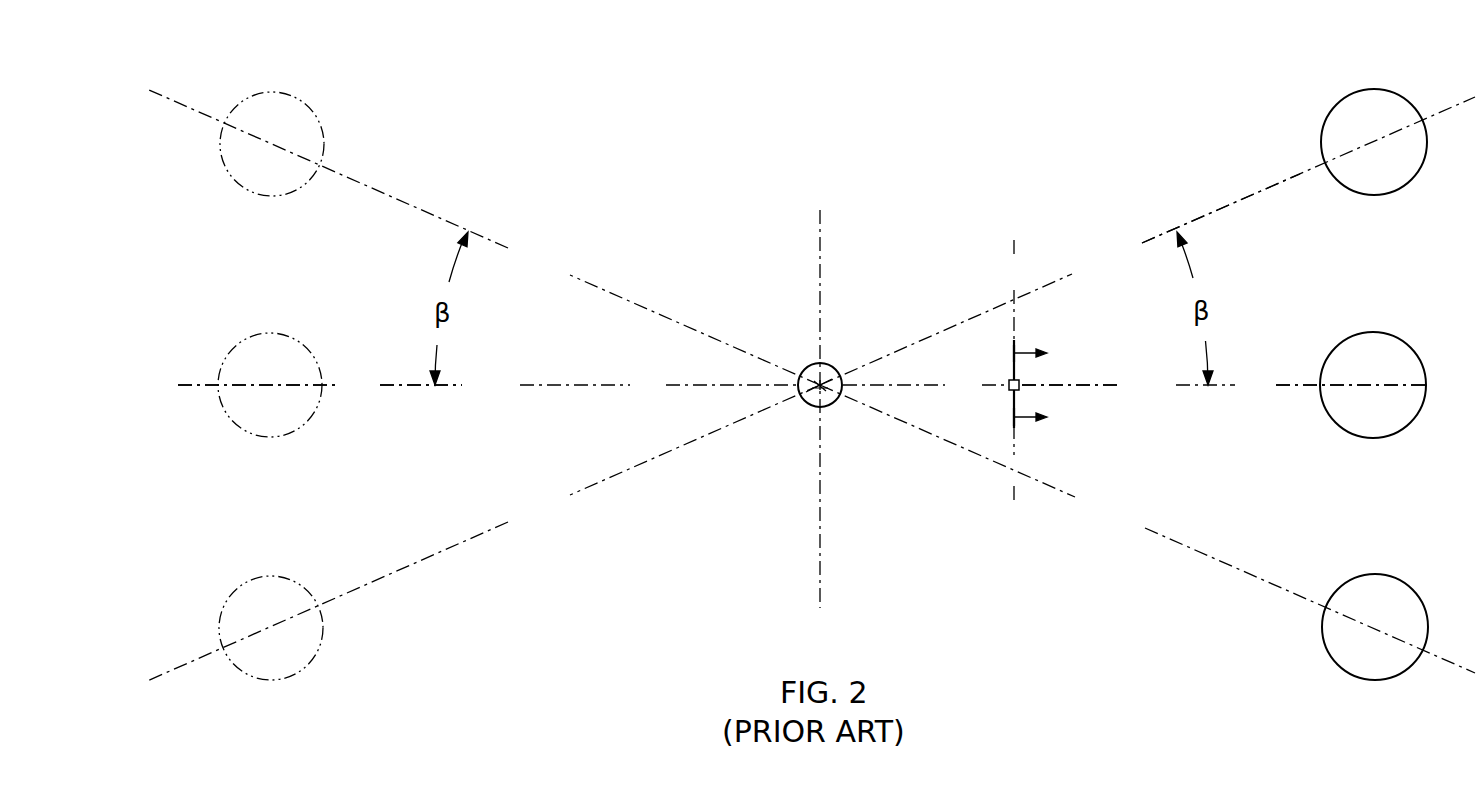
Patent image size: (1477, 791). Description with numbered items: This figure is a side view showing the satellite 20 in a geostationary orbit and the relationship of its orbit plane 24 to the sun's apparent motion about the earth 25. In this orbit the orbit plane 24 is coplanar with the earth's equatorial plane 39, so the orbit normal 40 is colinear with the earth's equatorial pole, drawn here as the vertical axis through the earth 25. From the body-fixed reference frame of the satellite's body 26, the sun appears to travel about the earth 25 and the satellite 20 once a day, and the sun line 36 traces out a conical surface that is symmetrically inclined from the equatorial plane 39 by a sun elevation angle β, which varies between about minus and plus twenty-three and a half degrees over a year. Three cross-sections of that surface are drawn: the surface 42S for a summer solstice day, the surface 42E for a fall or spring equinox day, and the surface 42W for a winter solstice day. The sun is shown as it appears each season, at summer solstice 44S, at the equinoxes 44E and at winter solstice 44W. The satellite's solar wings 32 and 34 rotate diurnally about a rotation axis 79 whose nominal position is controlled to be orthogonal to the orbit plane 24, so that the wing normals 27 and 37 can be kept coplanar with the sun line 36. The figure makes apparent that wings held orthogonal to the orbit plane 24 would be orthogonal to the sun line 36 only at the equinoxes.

The body-stabilized satellite 20 is at (1060, 420).
The orbit plane 24 is at (801, 385).
The Earth 25 is at (838, 402).
The satellite body 26 is at (1022, 388).
The area-normal vector 27 is at (1026, 352).
The solar wing 32 is at (1012, 363).
The solar wing 34 is at (1012, 412).
The sun line 36 is at (1221, 208).
The area-normal vector 37 is at (1022, 420).
The equatorial plane 39 is at (801, 385).
The orbit normal 40 is at (818, 250).
The summer solstice conical surface 42S is at (811, 238).
The equinox conical surface 42E is at (776, 385).
The winter solstice conical surface 42W is at (810, 533).
The sun at summer solstice 44S is at (1350, 92).
The sun at equinoxes 44E is at (1360, 334).
The sun at winter solstice 44W is at (1352, 678).
The rotation axis 79 is at (1018, 372).